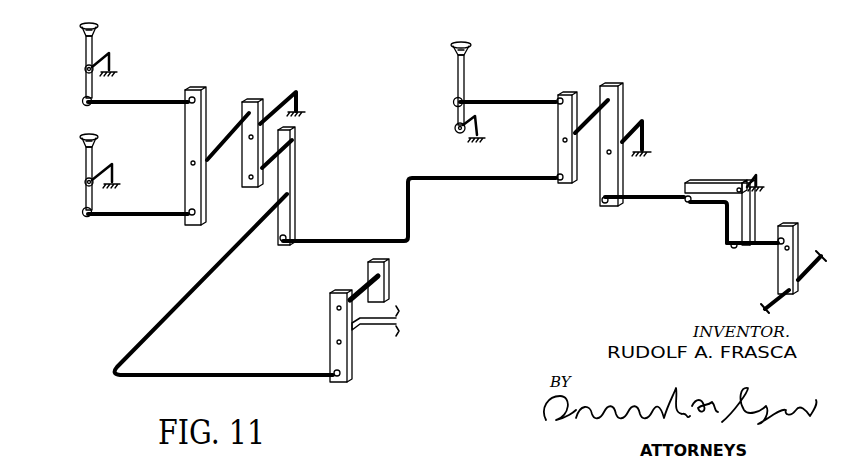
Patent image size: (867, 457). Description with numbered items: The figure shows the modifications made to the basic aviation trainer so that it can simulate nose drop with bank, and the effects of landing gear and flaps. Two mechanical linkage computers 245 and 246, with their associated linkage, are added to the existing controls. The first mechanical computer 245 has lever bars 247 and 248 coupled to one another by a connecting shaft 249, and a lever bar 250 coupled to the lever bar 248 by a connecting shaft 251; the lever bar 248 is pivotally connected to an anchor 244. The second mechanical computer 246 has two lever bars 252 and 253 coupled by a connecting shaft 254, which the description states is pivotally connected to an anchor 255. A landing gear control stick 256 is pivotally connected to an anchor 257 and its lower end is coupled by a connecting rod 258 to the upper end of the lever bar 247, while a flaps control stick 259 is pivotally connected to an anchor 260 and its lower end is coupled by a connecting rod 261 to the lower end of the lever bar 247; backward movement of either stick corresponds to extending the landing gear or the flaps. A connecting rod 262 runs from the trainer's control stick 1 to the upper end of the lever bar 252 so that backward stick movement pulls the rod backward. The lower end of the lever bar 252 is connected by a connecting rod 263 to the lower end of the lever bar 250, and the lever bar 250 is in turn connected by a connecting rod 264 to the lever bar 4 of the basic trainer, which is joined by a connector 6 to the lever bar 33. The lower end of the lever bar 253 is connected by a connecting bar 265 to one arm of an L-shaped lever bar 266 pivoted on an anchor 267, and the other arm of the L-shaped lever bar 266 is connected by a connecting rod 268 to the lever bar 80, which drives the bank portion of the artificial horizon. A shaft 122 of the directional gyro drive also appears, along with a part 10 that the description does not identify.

The control stick 1 is at (457, 64).
The lever bar 4 is at (329, 348).
The connector 6 is at (364, 286).
The bracket 10 is at (380, 330).
The lever bar 33 is at (390, 292).
The lever arm 80 is at (778, 280).
The shaft 122 is at (778, 306).
The anchor 244 is at (307, 96).
The mechanical linkage computer 245 is at (226, 97).
The mechanical linkage computer 246 is at (586, 89).
The lever bar 247 is at (186, 127).
The lever bar 248 is at (252, 98).
The connecting shaft 249 is at (222, 150).
The lever bar 250 is at (297, 203).
The connecting shaft 251 is at (294, 146).
The lever bar 252 is at (558, 125).
The lever bar 253 is at (623, 112).
The connecting shaft 254 is at (590, 140).
The anchor 255 is at (649, 150).
The landing gear control stick 256 is at (85, 58).
The anchor 257 is at (111, 57).
The connecting rod 258 is at (160, 99).
The flaps control stick 259 is at (85, 166).
The anchor 260 is at (120, 172).
The connecting rod 261 is at (158, 210).
The connecting rod 262 is at (523, 90).
The connecting rod 263 is at (409, 226).
The connecting rod 264 is at (184, 296).
The connecting bar 265 is at (640, 202).
The L-shaped lever bar 266 is at (716, 204).
The anchor 267 is at (765, 181).
The connecting rod 268 is at (759, 240).